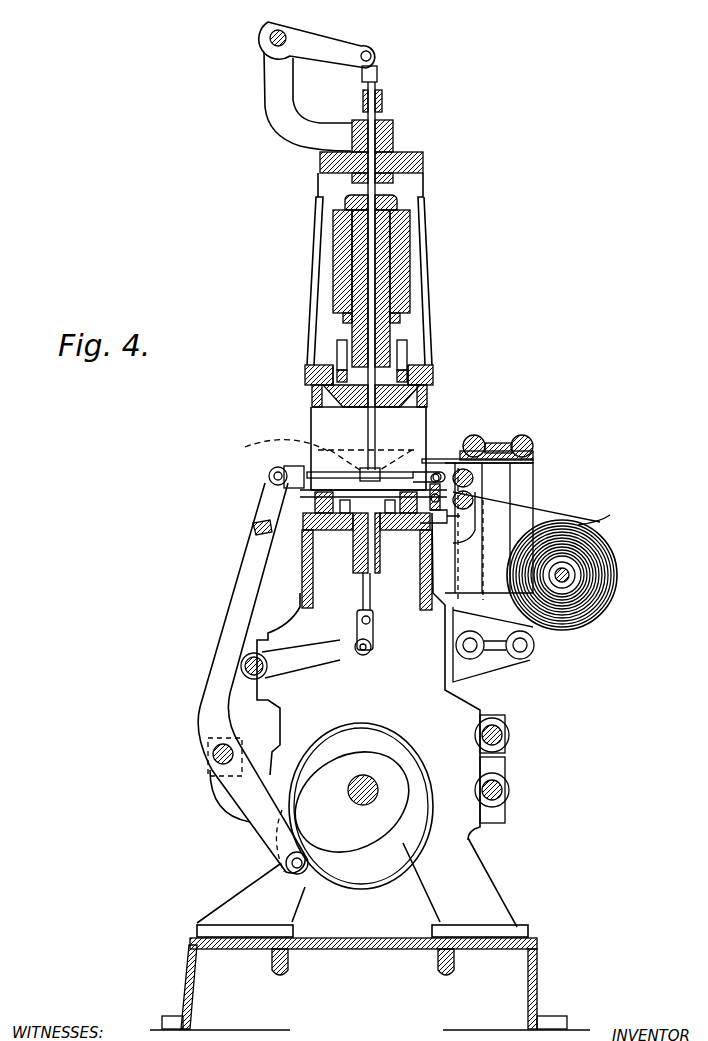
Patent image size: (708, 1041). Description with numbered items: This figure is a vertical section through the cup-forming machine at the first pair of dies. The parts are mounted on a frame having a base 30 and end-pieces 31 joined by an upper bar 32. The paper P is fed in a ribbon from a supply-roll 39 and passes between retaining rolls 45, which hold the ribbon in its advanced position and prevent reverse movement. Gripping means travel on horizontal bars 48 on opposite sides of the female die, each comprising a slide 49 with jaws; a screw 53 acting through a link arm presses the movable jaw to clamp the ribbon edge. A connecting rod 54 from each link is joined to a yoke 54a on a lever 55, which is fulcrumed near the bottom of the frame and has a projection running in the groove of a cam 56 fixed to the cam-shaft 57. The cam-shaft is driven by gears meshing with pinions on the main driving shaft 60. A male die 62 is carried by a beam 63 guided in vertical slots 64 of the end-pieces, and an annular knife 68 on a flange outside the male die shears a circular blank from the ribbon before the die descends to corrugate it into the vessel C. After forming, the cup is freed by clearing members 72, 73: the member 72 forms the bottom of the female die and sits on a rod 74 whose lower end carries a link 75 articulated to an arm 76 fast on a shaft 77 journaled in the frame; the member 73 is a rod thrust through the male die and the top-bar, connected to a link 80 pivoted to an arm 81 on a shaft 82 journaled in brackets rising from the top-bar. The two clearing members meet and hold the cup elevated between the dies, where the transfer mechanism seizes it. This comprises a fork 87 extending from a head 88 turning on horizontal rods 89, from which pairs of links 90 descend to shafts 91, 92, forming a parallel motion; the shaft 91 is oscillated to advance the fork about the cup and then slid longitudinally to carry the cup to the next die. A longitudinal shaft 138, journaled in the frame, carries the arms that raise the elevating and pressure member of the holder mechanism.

The base 30 is at (190, 995).
The end-piece 31 is at (500, 893).
The upper bar 32 is at (425, 165).
The supply-roll 39 is at (577, 575).
The retaining rolls 45 is at (471, 489).
The horizontal bars 48 is at (303, 508).
The slide 49 is at (432, 459).
The screw 53 is at (300, 565).
The connecting rod 54 is at (420, 474).
The yoke 54a is at (246, 441).
The lever 55 is at (275, 482).
The cam 56 is at (418, 848).
The cam-shaft 57 is at (410, 552).
The main driving shaft 60 is at (500, 795).
The male die 62 is at (320, 403).
The beam 63 is at (412, 298).
The vertical slots 64 is at (377, 185).
The annular knife 68 is at (312, 376).
The clearing member 72 is at (365, 470).
The clearing member 73 is at (370, 290).
The rod 74 is at (365, 600).
The link 75 is at (373, 643).
The arm 76 is at (327, 665).
The shaft 77 is at (250, 666).
The link 80 is at (378, 72).
The arm 81 is at (305, 57).
The shaft 82 is at (285, 37).
The fork 87 is at (437, 459).
The head 88 is at (500, 447).
The rods 89 is at (477, 440).
The links 90 is at (475, 497).
The shaft 91 is at (470, 650).
The shaft 92 is at (522, 650).
The shaft 138 is at (500, 740).
The vessel C is at (342, 476).
The paper P is at (594, 503).